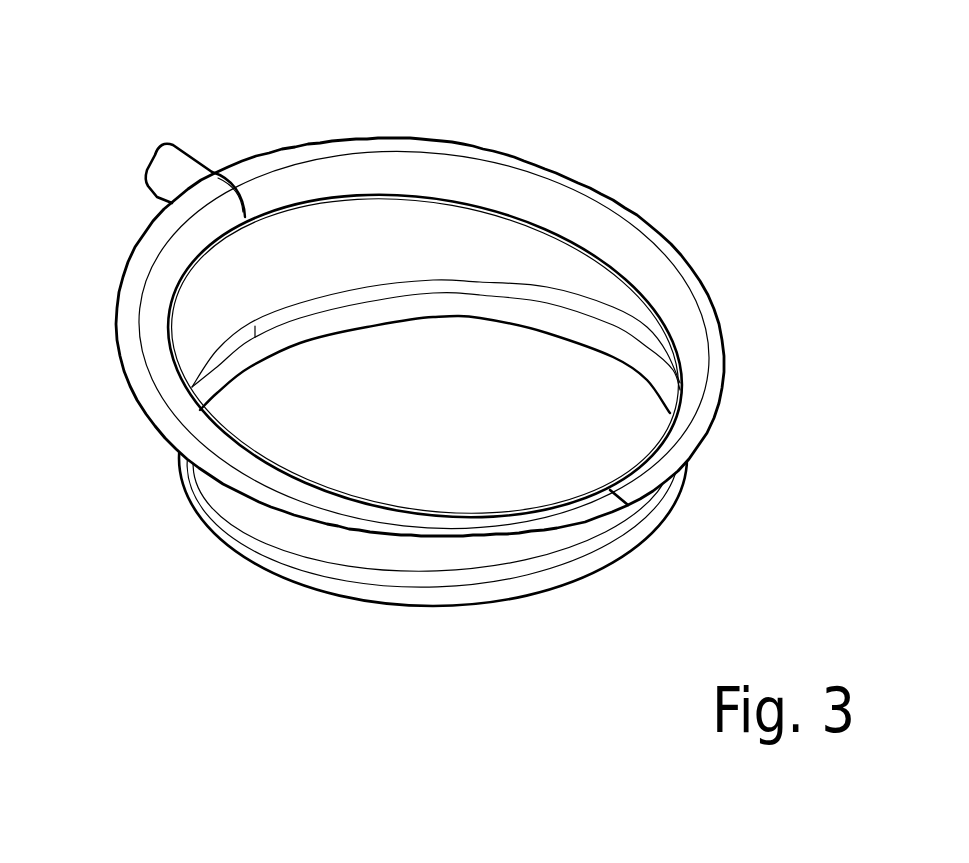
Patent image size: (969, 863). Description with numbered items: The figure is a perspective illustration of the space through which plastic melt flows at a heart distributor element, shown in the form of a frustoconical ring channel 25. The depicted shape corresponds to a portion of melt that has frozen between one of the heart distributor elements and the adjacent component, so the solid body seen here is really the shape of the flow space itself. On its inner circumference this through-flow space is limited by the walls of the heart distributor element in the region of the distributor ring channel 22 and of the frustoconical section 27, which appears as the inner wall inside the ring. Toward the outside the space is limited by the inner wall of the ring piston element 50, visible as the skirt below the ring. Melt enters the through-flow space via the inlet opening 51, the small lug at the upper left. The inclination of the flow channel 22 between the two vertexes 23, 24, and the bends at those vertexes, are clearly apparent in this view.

The distributor ring channel 22 is at (347, 167).
The vertex 23 is at (243, 215).
The vertex 24 is at (628, 505).
The frustoconical ring channel 25 is at (734, 114).
The frustoconical section 27 is at (492, 243).
The ring piston element 50 is at (278, 527).
The inlet opening 51 is at (167, 169).